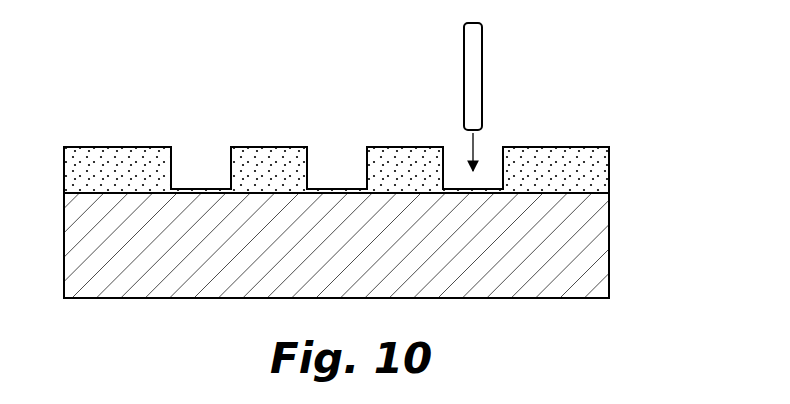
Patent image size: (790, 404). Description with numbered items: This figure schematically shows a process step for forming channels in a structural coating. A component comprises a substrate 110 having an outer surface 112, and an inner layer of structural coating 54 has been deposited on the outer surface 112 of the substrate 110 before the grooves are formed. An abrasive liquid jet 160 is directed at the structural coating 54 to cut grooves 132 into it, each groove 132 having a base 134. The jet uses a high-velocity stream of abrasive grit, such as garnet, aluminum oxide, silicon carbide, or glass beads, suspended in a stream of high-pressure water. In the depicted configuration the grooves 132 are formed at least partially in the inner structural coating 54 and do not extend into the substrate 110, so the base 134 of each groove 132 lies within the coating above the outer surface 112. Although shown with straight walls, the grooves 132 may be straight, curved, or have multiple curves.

The inner layer of structural coating 54 is at (82, 155).
The substrate 110 is at (594, 250).
The outer surface 112 is at (85, 197).
The grooves 132 is at (202, 170).
The base 134 is at (493, 191).
The abrasive liquid jet 160 is at (472, 43).